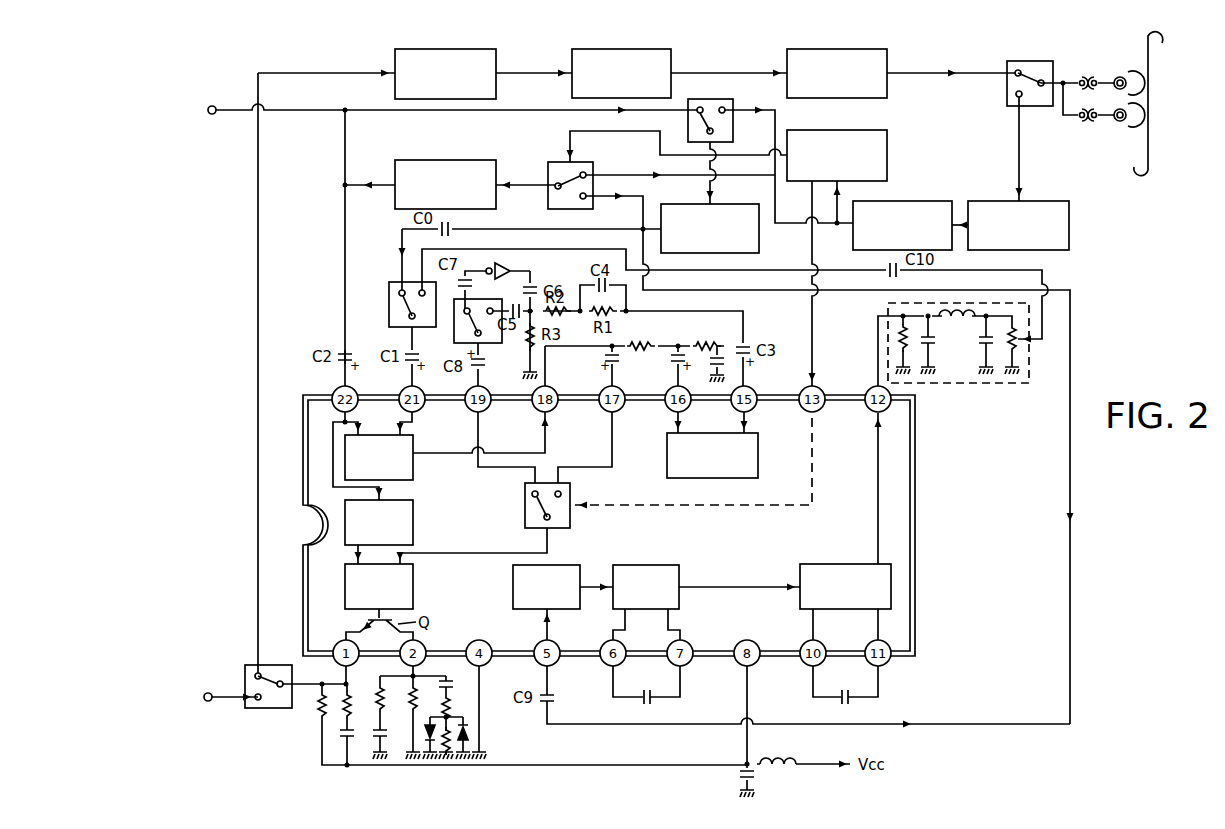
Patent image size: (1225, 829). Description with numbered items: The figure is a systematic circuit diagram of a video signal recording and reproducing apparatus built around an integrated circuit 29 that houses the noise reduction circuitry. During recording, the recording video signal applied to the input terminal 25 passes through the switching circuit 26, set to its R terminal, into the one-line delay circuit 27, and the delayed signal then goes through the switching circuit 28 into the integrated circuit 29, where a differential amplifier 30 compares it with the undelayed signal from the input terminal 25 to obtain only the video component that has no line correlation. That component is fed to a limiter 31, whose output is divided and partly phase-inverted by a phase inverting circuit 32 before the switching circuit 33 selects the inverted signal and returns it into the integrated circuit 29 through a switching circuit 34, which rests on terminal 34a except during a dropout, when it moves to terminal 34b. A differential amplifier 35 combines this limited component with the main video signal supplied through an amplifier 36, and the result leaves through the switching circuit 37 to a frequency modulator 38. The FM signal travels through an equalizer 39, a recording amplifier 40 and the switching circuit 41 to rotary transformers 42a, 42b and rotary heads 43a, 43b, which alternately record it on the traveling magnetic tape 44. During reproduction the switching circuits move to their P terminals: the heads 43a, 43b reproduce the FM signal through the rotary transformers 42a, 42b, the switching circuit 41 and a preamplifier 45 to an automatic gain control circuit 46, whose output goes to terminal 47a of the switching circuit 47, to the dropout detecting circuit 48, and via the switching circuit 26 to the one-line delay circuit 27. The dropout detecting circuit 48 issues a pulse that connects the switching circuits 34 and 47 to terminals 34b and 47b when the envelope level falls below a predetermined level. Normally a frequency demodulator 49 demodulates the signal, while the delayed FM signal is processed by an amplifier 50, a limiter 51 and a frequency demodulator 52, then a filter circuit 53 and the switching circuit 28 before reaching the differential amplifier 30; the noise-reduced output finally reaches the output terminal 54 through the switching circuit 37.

The input terminal 25 is at (210, 98).
The switching circuit 26 is at (733, 125).
The 1H delay circuit 27 is at (727, 204).
The switching circuit 28 is at (394, 284).
The integrated circuit 29 is at (915, 494).
The differential amplifier 30 is at (413, 450).
The limiter 31 is at (758, 458).
The phase inverting circuit 32 is at (511, 267).
The switching circuit 33 is at (495, 343).
The switching circuit 34 is at (525, 522).
The terminal 34a is at (532, 494).
The terminal 34b is at (561, 494).
The differential amplifier 35 is at (413, 592).
The amplifier 36 is at (413, 528).
The switching circuit 37 is at (270, 708).
The frequency modulator 38 is at (446, 44).
The equalizer 39 is at (619, 44).
The recording amplifier 40 is at (840, 44).
The switching circuit 41 is at (1030, 61).
The rotary transformer 42a is at (1090, 71).
The rotary transformer 42b is at (1095, 123).
The rotary head 43a is at (1128, 69).
The rotary head 43b is at (1125, 130).
The magnetic tape 44 is at (1150, 140).
The preamplifier 45 is at (1000, 201).
The automatic gain control circuit 46 is at (909, 193).
The switching circuit 47 is at (555, 159).
The terminal 47a is at (590, 174).
The terminal 47b is at (590, 199).
The dropout detecting circuit 48 is at (841, 125).
The frequency demodulator 49 is at (450, 155).
The amplifier 50 is at (555, 565).
The limiter 51 is at (643, 565).
The frequency demodulator 52 is at (839, 564).
The filter circuit 53 is at (991, 385).
The output terminal 54 is at (229, 686).